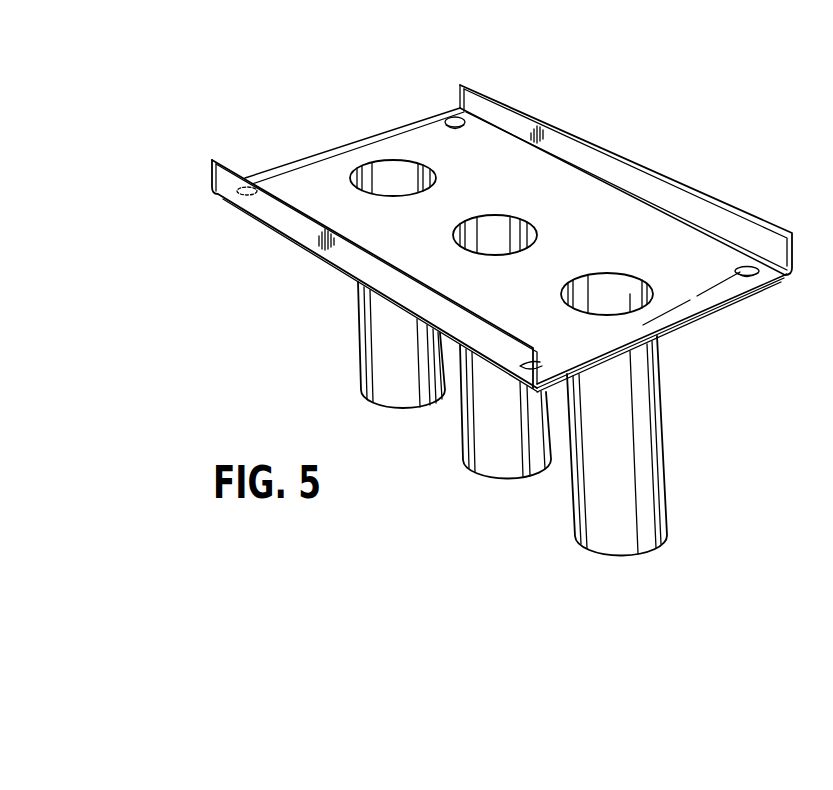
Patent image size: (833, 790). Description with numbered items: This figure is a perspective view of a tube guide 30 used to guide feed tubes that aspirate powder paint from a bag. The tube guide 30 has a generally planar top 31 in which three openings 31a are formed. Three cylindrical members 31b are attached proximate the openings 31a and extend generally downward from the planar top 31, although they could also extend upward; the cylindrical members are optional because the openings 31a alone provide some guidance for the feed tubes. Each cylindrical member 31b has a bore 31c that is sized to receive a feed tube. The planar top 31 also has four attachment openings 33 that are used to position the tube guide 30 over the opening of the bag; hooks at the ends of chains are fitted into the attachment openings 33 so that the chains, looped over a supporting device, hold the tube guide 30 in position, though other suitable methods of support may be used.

The tube guide 30 is at (644, 154).
The planar top 31 is at (676, 238).
The openings 31a is at (376, 167).
The cylindrical members 31b is at (368, 356).
The bores 31c is at (490, 233).
The attachment openings 33 is at (453, 115).